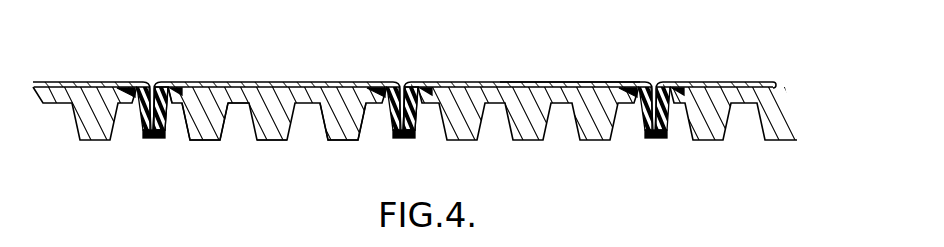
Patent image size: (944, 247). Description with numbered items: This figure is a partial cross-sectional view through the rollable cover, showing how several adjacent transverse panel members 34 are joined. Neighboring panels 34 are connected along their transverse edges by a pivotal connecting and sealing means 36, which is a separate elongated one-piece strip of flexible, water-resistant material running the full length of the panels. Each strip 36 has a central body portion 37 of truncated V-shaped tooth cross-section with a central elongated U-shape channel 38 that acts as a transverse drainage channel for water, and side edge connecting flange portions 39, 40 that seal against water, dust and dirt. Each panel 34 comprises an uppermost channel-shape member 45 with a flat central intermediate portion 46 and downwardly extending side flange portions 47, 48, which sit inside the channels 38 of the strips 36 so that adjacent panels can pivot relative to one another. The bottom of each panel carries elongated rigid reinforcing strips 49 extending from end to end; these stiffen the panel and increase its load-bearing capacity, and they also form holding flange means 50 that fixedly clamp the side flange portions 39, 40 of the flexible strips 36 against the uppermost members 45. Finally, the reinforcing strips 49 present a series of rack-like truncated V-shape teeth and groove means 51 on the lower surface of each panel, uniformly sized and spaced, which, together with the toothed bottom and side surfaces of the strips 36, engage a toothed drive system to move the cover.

The transverse panel member 34 is at (232, 80).
The pivotal connecting and sealing means 36 is at (152, 146).
The central body portion 37 is at (157, 131).
The central elongated U-shape channel 38 is at (386, 126).
The side edge connecting flange portion 39 is at (120, 83).
The side edge connecting flange portion 40 is at (184, 93).
The uppermost channel-shape member 45 is at (409, 86).
The flat central intermediate portion 46 is at (565, 86).
The downwardly extending side flange portion 47 is at (424, 124).
The downwardly extending side flange portion 48 is at (634, 126).
The elongated rigid reinforcing strip 49 is at (278, 102).
The holding flange means 50 is at (178, 104).
The rack-like truncated V-shape teeth and groove means 51 is at (323, 141).